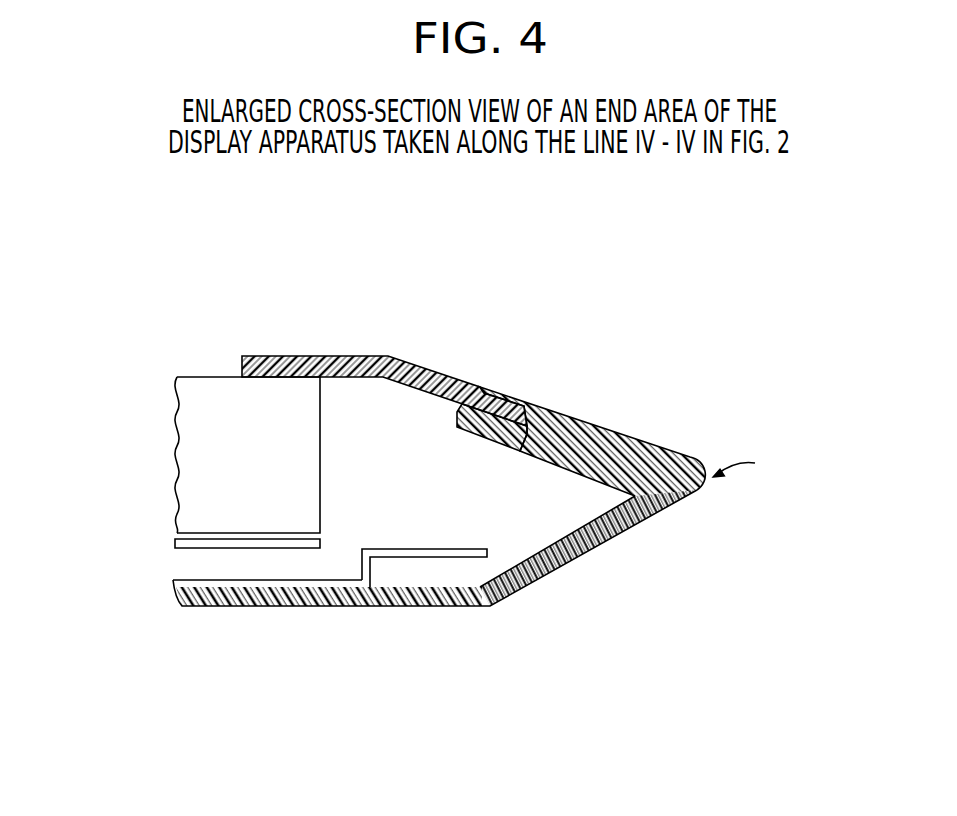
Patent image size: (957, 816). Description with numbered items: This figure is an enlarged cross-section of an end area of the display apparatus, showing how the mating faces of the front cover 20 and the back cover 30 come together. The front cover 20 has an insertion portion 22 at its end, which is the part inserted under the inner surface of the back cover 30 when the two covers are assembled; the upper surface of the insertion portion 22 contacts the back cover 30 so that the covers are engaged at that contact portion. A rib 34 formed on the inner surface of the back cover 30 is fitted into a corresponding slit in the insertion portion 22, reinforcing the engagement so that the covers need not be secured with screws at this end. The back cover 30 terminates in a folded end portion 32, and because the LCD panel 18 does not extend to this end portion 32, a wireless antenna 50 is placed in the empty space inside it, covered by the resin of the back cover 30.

The LCD panel 18 is at (190, 418).
The front cover 20 is at (310, 355).
The insertion portion 22 is at (555, 430).
The back cover 30 is at (360, 606).
The folded end portion 32 is at (821, 459).
The rib 34 is at (543, 440).
The wireless antenna 50 is at (467, 606).